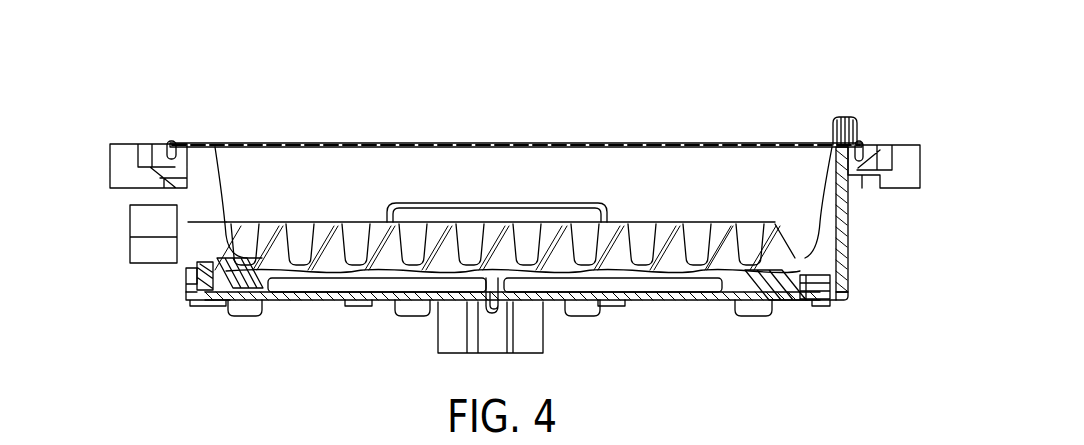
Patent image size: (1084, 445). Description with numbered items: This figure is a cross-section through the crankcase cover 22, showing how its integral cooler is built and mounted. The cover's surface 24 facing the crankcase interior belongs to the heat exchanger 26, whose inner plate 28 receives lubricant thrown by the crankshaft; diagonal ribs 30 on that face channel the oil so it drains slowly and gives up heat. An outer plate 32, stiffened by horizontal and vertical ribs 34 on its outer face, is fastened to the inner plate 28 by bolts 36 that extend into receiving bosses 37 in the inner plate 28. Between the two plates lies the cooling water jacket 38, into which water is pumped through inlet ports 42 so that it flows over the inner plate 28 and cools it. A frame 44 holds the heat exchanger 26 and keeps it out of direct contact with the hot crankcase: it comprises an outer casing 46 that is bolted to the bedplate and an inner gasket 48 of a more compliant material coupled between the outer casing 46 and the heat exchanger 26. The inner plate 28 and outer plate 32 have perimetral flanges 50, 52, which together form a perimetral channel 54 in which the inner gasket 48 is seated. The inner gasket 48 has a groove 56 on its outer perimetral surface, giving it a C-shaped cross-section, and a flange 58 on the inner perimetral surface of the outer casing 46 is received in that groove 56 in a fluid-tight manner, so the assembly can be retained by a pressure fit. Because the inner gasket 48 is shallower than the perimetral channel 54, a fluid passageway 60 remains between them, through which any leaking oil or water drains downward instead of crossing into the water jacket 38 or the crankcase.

The crankcase cover 22 is at (884, 114).
The surface of the crankcase cover 24 is at (447, 221).
The heat exchanger 26 is at (208, 309).
The inner plate 28 is at (735, 278).
The ribs 30 is at (402, 220).
The outer plate 32 is at (287, 301).
The ribs 34 is at (362, 304).
The bolts 36 is at (410, 318).
The receiving bosses 37 is at (231, 221).
The cooling water jacket 38 is at (663, 280).
The inlet ports 42 is at (503, 357).
The frame 44 is at (839, 299).
The outer casing 46 is at (843, 213).
The inner gasket 48 is at (197, 295).
The perimetral flange 50 is at (797, 262).
The perimetral flange 52 is at (818, 302).
The perimetral channel 54 is at (225, 308).
The groove 56 is at (200, 281).
The flange 58 is at (815, 283).
The fluid passageway 60 is at (803, 265).